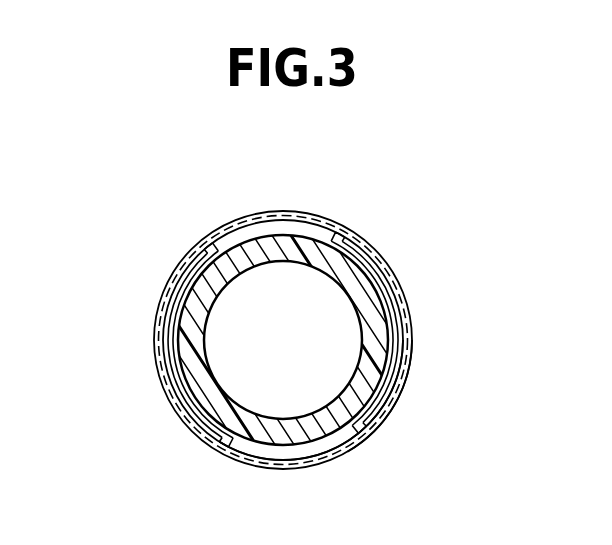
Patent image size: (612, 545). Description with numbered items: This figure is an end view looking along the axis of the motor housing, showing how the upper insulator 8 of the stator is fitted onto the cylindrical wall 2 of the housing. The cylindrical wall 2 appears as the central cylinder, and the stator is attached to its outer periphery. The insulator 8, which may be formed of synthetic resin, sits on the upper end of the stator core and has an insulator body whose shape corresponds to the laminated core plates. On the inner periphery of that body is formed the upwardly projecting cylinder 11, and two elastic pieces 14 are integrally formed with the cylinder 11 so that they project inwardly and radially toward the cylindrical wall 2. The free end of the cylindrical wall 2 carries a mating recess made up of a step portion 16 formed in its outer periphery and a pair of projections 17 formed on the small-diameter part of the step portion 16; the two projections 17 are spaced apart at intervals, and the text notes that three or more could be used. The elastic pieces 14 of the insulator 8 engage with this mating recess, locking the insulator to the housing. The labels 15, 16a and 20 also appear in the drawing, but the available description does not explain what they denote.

The cylindrical wall 2 is at (339, 300).
The insulator 8 is at (318, 340).
The cylinder 11 is at (265, 348).
The elastic pieces 14 is at (283, 363).
The insulating layer 15 is at (425, 396).
The step portion 16 is at (288, 480).
The lead wire portion 16a is at (426, 396).
The projections 17 is at (272, 339).
The covering layer 20 is at (232, 340).